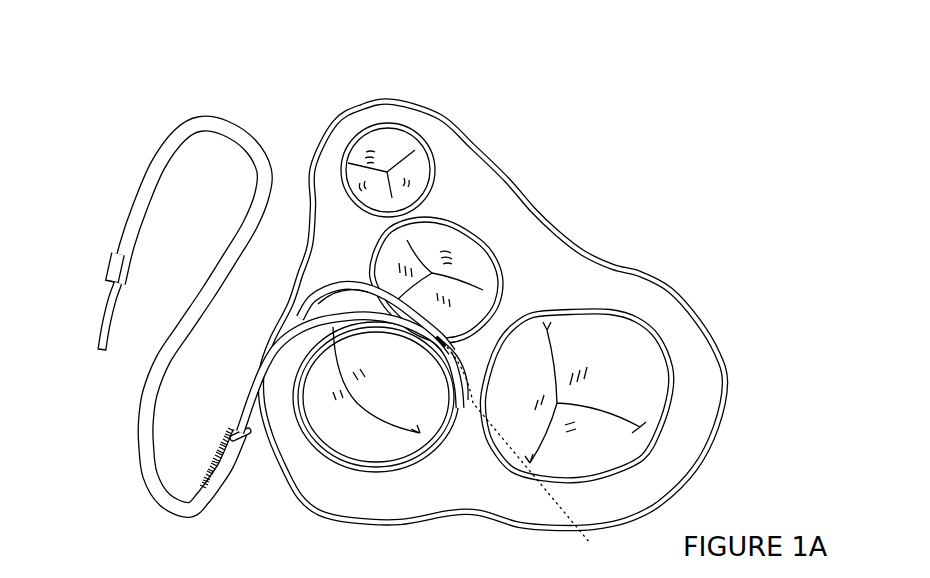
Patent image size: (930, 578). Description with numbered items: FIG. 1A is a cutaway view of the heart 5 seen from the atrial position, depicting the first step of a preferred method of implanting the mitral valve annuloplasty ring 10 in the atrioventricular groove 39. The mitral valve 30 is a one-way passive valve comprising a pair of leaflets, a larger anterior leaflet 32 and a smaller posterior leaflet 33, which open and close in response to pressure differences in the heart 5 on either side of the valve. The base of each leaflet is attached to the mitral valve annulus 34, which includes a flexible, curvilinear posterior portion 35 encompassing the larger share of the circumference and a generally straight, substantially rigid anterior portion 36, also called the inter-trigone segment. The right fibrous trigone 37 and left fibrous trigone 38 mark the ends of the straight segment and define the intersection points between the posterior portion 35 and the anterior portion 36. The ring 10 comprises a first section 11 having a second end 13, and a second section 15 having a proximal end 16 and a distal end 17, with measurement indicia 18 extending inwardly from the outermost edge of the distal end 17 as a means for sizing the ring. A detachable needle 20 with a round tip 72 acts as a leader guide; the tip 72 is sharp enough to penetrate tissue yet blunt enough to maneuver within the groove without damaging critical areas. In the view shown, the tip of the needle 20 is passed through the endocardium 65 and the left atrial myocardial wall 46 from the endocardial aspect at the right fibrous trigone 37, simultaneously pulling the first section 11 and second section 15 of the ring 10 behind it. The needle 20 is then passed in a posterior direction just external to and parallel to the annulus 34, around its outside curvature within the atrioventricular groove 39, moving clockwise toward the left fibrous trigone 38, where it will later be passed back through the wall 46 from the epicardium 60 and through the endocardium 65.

The heart 5 is at (516, 313).
The annuloplasty ring 10 is at (320, 309).
The first section 11 is at (100, 310).
The second end 13 is at (98, 342).
The second section 15 is at (148, 150).
The proximal end 16 is at (112, 270).
The distal end 17 is at (236, 447).
The measurement indicia 18 is at (207, 489).
The detachable needle 20 is at (430, 309).
The mitral valve 30 is at (393, 359).
The anterior leaflet 32 is at (388, 395).
The posterior leaflet 33 is at (350, 427).
The mitral valve annulus 34 is at (417, 455).
The posterior portion 35 is at (307, 410).
The anterior portion 36 is at (388, 312).
The right fibrous trigone 37 is at (450, 340).
The left fibrous trigone 38 is at (353, 273).
The atrioventricular groove 39 is at (390, 478).
The left atrial myocardial wall 46 is at (433, 450).
The epicardium 60 is at (719, 352).
The endocardium 65 is at (463, 395).
The tip 72 is at (534, 459).